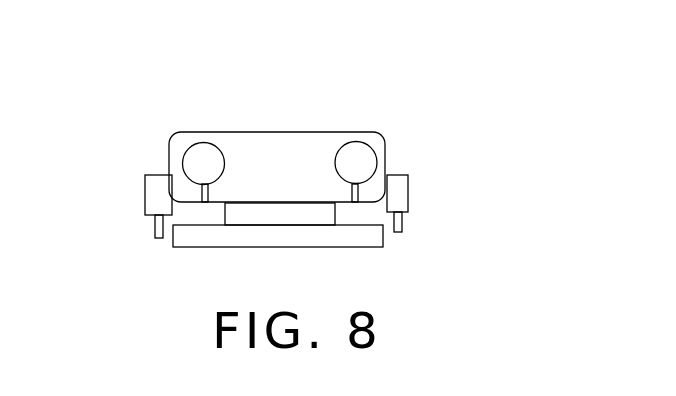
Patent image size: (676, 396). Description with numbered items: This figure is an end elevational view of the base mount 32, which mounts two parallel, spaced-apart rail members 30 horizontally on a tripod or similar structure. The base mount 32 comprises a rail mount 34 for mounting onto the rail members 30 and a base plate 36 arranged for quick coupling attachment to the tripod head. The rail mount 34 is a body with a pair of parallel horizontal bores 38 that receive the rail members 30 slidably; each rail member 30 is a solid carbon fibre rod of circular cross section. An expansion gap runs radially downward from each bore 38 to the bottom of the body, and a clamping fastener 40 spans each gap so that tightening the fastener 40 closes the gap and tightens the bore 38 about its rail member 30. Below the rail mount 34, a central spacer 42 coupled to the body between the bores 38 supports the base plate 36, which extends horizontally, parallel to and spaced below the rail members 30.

The rail member 30 is at (200, 162).
The base mount 32 is at (294, 114).
The rail mount 34 is at (313, 153).
The base plate 36 is at (355, 235).
The bore 38 is at (179, 157).
The clamping fastener 40 is at (152, 190).
The central spacer 42 is at (225, 208).